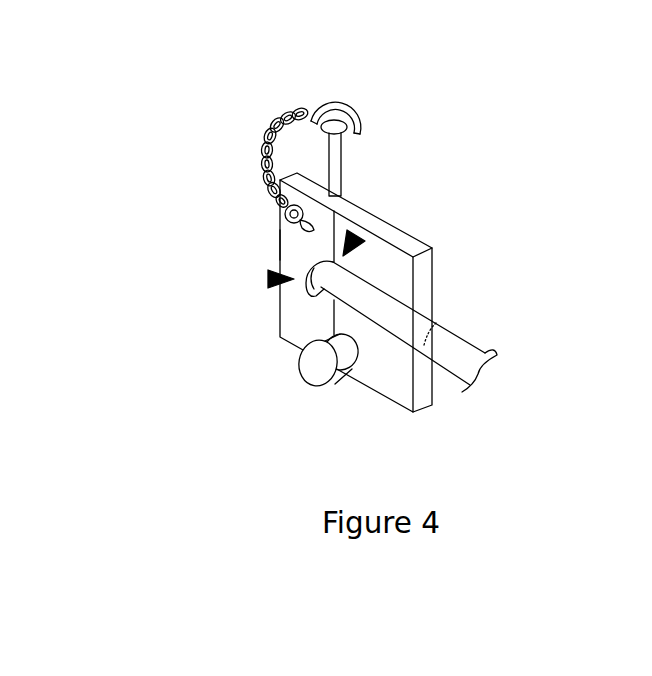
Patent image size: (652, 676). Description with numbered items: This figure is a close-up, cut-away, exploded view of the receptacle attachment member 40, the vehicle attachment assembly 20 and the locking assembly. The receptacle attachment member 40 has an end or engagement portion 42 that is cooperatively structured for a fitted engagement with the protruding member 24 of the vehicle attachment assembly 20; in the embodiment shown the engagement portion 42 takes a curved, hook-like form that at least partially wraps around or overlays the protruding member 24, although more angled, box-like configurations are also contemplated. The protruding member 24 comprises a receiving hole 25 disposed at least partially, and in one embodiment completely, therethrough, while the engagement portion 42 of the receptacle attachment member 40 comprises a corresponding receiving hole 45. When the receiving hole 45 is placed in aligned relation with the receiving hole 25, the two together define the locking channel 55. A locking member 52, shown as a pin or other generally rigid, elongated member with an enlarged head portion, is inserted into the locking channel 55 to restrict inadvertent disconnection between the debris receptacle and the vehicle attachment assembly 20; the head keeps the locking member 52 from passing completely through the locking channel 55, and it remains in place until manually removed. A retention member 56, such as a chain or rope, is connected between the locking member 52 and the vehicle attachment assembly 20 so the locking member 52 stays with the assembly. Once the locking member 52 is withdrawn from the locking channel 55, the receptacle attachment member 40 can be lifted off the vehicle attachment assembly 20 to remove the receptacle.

The vehicle attachment assembly 20 is at (407, 273).
The protruding member 24 is at (349, 378).
The receiving hole 25 is at (303, 343).
The receptacle attachment member 40 is at (456, 345).
The engagement portion 42 is at (268, 279).
The receiving hole 45 is at (333, 262).
The locking member 52 is at (350, 152).
The locking channel 55 is at (353, 235).
The retention member 56 is at (268, 122).